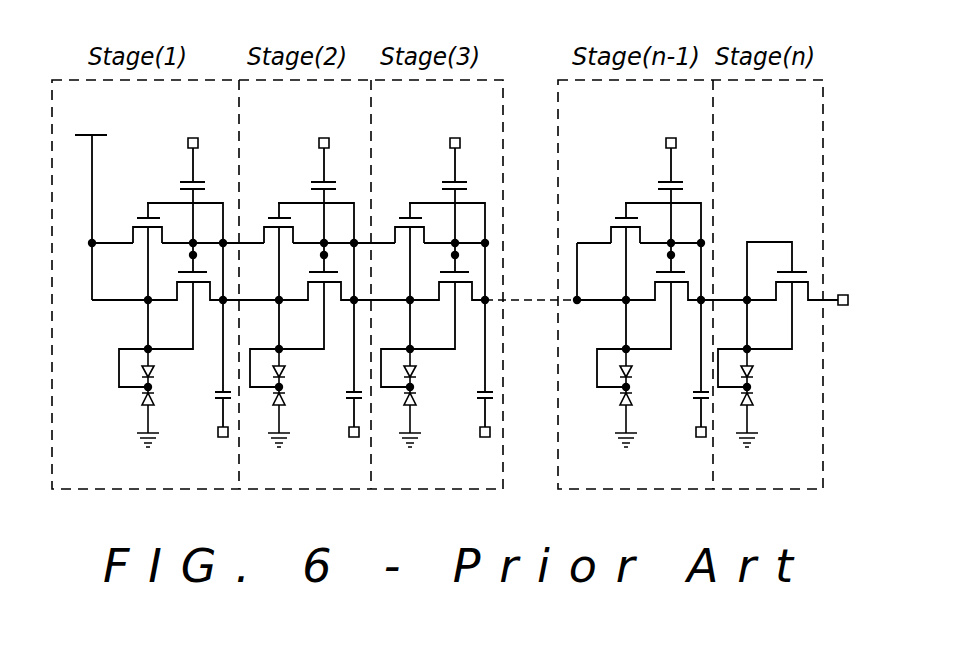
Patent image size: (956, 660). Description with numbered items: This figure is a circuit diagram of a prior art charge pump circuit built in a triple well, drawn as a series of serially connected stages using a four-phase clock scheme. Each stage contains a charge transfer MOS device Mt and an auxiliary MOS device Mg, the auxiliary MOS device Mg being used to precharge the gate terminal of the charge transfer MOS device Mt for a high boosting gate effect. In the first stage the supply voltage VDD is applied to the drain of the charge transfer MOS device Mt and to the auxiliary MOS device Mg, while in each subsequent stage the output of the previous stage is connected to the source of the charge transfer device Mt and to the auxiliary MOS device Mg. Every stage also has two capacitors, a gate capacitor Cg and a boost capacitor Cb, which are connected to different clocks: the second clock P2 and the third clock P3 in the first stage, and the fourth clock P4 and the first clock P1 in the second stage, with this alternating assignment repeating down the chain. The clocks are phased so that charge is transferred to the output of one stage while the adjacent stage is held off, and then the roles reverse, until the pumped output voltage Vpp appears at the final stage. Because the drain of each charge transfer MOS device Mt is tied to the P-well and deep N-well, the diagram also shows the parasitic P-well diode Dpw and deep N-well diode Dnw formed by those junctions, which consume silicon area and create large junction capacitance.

The supply voltage VDD is at (94, 205).
The pumped output voltage Vpp is at (846, 283).
The auxiliary MOS device Mg is at (405, 216).
The gate capacitor Cg is at (413, 180).
The charge transfer MOS device Mt is at (477, 310).
The P-well diode Dpw is at (475, 371).
The deep N-well diode Dnw is at (453, 418).
The boost capacitor Cb is at (449, 396).
The first clock P1 is at (529, 448).
The second clock P2 is at (323, 129).
The third clock P3 is at (356, 448).
The fourth clock P4 is at (496, 129).